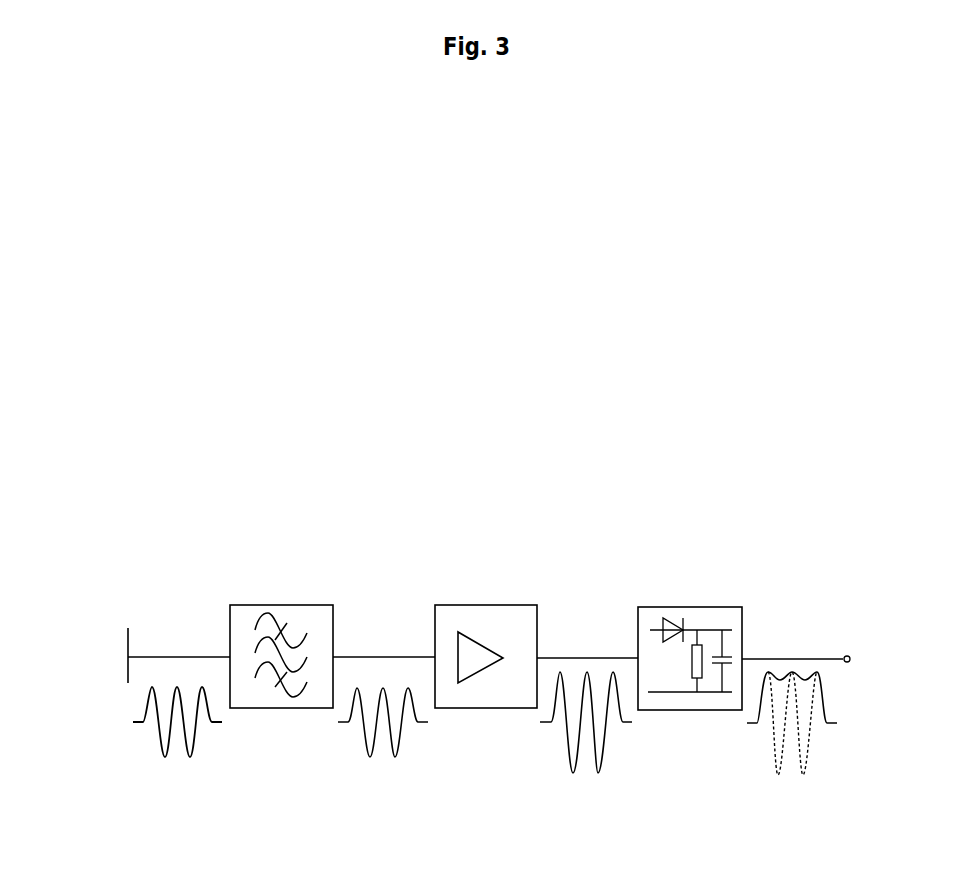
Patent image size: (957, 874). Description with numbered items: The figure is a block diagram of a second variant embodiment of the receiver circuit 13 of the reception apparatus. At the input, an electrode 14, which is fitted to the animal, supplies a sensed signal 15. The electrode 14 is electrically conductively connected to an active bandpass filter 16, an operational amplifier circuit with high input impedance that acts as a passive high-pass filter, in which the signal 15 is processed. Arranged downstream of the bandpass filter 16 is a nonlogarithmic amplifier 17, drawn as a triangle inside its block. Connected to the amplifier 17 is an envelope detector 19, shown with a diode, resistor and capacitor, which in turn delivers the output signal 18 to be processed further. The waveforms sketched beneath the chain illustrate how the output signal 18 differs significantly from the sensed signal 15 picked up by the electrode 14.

The circuit 13 is at (518, 528).
The electrode 14 is at (123, 622).
The signal 15 is at (148, 750).
The active bandpass filter 16 is at (308, 600).
The amplifier 17 is at (542, 602).
The output signal 18 is at (797, 657).
The envelope detector 19 is at (728, 593).